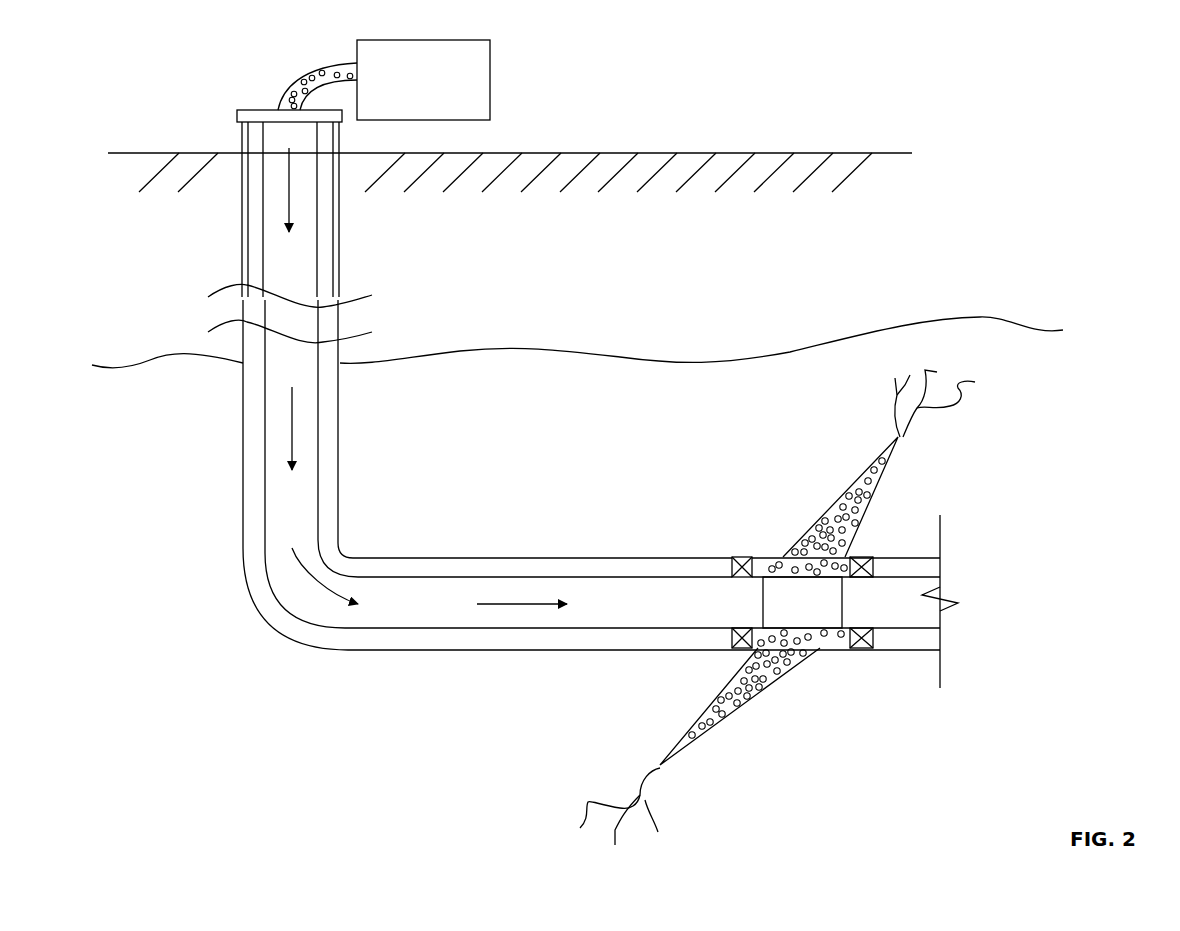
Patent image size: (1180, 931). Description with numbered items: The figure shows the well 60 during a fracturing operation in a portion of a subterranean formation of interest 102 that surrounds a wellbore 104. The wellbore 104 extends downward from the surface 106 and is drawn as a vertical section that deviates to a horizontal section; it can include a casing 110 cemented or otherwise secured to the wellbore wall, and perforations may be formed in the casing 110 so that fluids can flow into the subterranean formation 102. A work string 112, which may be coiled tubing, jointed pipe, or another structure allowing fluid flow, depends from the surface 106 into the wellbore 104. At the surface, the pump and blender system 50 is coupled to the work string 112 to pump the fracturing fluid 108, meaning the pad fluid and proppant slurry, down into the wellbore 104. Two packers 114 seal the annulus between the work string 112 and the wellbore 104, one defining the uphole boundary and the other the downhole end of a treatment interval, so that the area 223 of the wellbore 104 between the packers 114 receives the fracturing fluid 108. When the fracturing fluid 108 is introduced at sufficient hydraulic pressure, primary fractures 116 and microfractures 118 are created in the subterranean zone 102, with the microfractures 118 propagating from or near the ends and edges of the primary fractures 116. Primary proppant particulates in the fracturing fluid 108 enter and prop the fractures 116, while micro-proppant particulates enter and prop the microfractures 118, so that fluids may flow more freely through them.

The pump and blender system 50 is at (446, 95).
The well 60 is at (252, 642).
The subterranean formation of interest 102 is at (573, 396).
The wellbore 104 is at (252, 240).
The surface 106 is at (698, 152).
The fracturing fluid 108 is at (298, 84).
The casing 110 is at (247, 275).
The work string 112 is at (264, 478).
The packers 114 is at (745, 556).
The primary fractures 116 is at (826, 500).
The microfractures 118 is at (884, 381).
The area of the wellbore between packers 223 is at (783, 613).